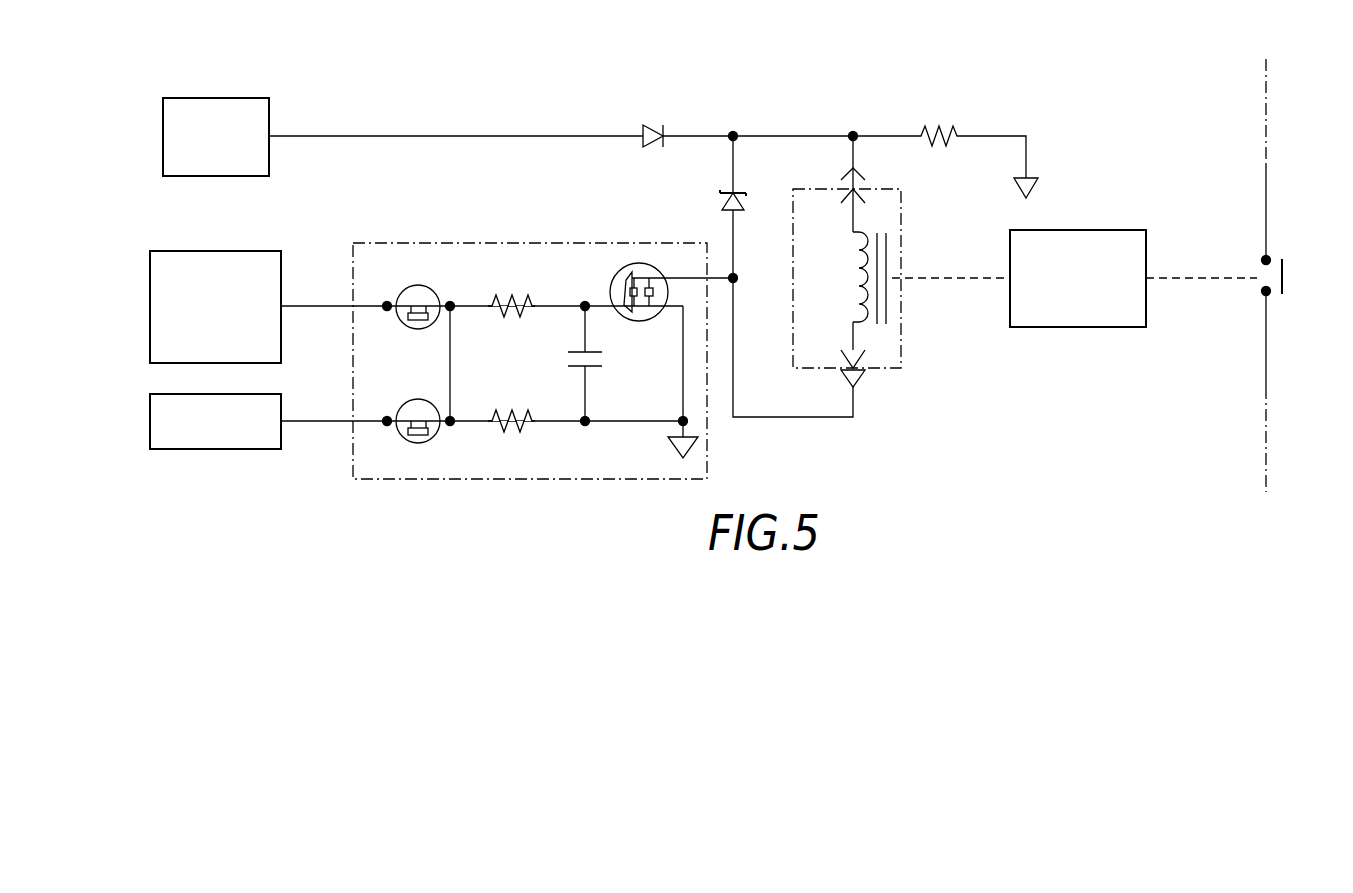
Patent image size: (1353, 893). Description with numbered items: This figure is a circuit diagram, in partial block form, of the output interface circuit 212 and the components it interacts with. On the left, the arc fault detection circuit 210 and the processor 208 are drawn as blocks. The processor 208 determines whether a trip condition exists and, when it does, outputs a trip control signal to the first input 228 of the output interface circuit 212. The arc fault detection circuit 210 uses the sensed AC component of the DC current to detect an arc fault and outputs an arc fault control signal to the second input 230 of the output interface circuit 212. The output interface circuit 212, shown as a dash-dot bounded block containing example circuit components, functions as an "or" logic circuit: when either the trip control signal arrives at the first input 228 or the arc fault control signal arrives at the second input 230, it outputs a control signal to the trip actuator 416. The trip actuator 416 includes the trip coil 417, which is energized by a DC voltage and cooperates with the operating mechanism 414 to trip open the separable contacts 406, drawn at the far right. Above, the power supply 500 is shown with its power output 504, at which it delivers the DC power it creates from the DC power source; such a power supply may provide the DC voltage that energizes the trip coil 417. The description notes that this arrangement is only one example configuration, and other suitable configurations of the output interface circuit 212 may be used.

The power supply 500 is at (222, 98).
The power output 504 is at (270, 136).
The arc fault detection circuit 210 is at (150, 272).
The processor 208 is at (205, 449).
The second input 230 is at (353, 306).
The first input 228 is at (353, 421).
The output interface circuit 212 is at (488, 479).
The trip actuator 416 is at (874, 271).
The trip coil 417 is at (888, 249).
The operating mechanism 414 is at (1084, 327).
The separable contacts 406 is at (1283, 275).